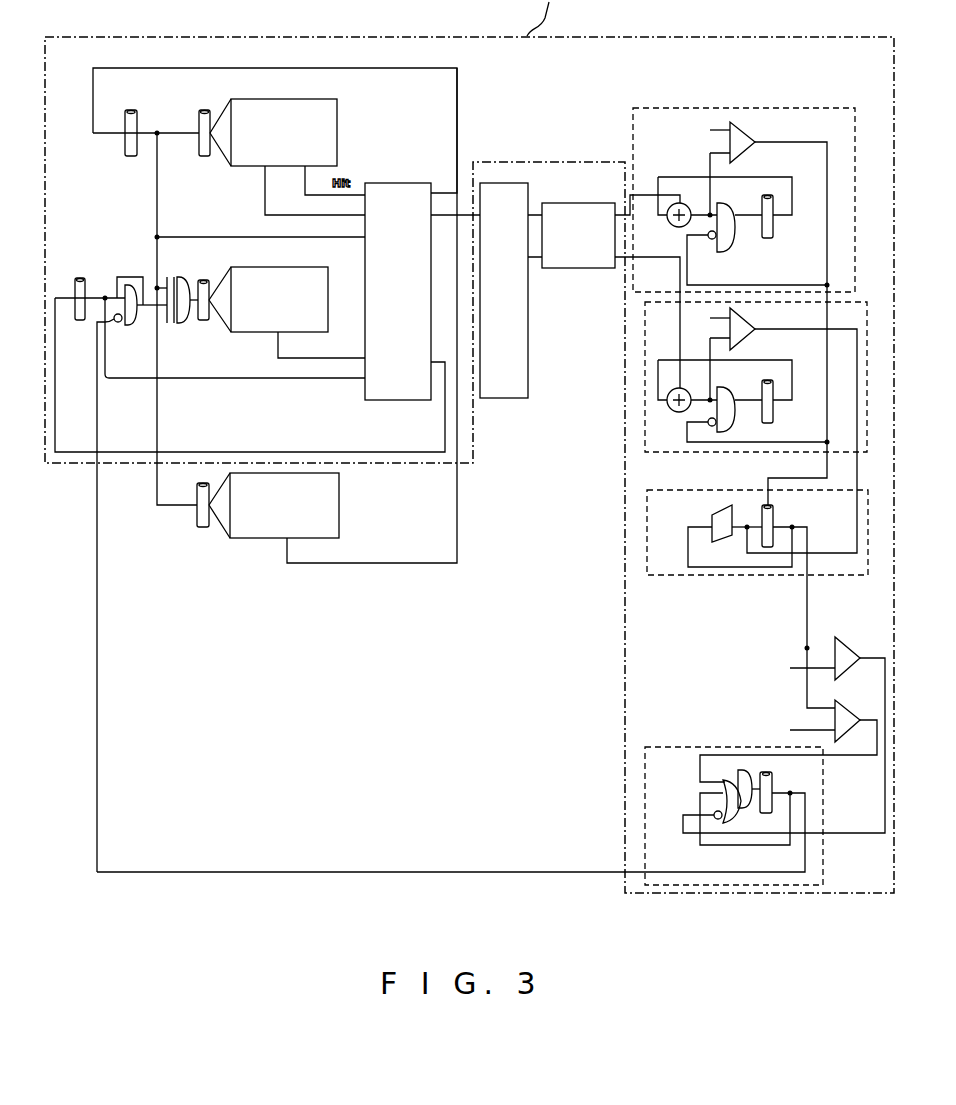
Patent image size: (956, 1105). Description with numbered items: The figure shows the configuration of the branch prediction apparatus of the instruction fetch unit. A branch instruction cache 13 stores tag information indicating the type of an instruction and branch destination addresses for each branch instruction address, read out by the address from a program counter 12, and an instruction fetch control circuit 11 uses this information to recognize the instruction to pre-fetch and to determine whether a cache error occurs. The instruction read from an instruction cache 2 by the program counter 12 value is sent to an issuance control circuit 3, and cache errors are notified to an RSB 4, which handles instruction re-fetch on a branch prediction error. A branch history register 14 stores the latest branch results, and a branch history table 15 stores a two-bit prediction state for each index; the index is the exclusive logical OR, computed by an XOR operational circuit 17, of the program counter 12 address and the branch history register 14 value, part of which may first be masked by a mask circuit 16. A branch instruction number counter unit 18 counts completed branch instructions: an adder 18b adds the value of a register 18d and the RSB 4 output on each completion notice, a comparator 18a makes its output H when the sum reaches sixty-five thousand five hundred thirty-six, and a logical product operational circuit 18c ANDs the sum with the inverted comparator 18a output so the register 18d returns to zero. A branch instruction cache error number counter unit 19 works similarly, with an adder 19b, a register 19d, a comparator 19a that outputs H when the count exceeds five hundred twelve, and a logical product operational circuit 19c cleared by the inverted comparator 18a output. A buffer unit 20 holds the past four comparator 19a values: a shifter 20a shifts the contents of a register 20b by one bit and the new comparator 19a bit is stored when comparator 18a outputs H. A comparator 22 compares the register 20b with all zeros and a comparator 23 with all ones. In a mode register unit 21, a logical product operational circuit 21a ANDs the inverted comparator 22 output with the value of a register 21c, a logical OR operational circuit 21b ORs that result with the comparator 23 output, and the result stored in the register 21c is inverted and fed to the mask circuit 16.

The instruction cache 2 is at (345, 503).
The issuance control circuit 3 is at (503, 398).
The RSB 4 is at (583, 268).
The instruction fetch control circuit 11 is at (400, 183).
The program counter 12 is at (128, 157).
The branch instruction cache 13 is at (285, 99).
The branch history register 14 is at (77, 282).
The branch history table 15 is at (282, 267).
The mask circuit 16 is at (108, 326).
The exclusive logical OR operational circuit 17 is at (176, 326).
The branch instruction number counter unit 18 is at (744, 278).
The comparator 18a is at (745, 130).
The adder 18b is at (672, 223).
The logical product operational circuit 18c is at (725, 252).
The register 18d is at (774, 238).
The branch instruction cache error number counter unit 19 is at (768, 427).
The comparator 19a is at (745, 341).
The adder 19b is at (675, 412).
The logical product operational circuit 19c is at (722, 390).
The register 19d is at (770, 424).
The branch instruction cache error rate threshold-exceeding flag buffer unit 20 is at (757, 599).
The shifter 20a is at (712, 512).
The register 20b is at (775, 520).
The mode register unit 21 is at (460, 798).
The logical product operational circuit 21a is at (730, 825).
The logical OR operational circuit 21b is at (745, 812).
The register 21c is at (775, 790).
The comparator 22 is at (845, 637).
The comparator 23 is at (845, 700).